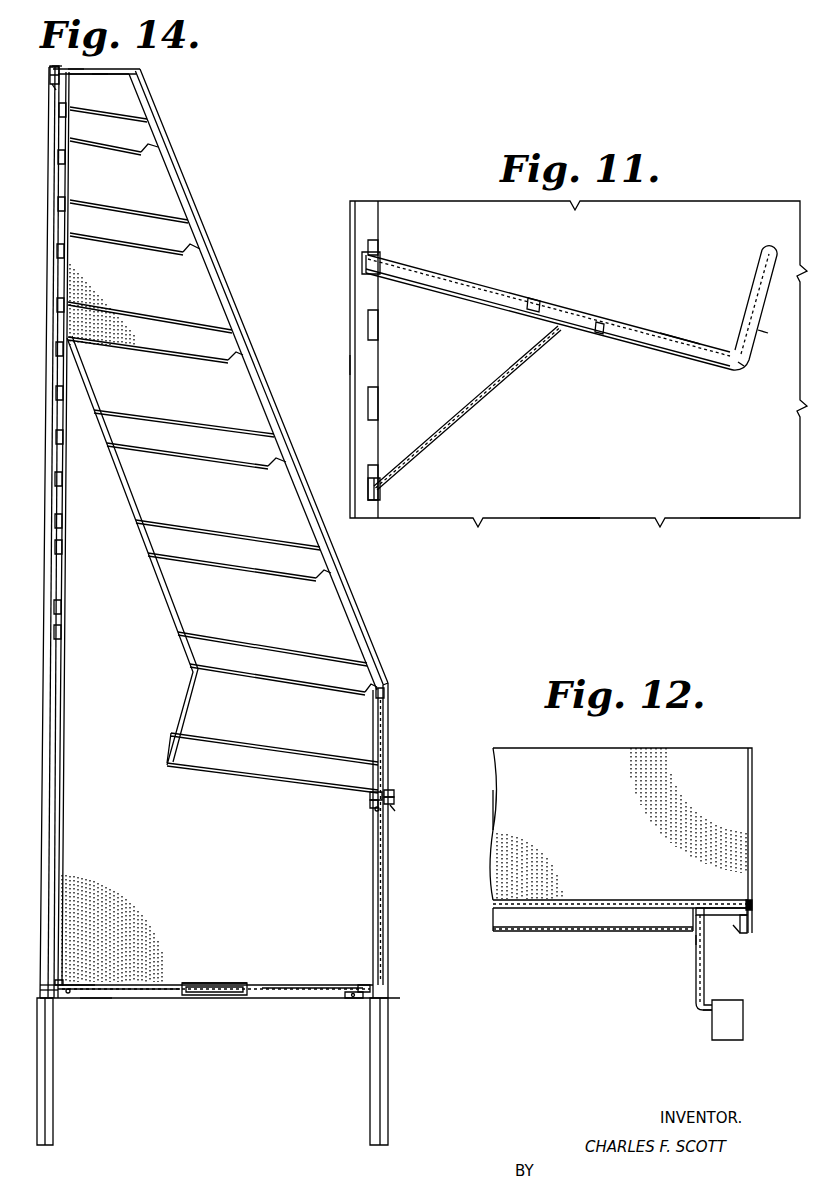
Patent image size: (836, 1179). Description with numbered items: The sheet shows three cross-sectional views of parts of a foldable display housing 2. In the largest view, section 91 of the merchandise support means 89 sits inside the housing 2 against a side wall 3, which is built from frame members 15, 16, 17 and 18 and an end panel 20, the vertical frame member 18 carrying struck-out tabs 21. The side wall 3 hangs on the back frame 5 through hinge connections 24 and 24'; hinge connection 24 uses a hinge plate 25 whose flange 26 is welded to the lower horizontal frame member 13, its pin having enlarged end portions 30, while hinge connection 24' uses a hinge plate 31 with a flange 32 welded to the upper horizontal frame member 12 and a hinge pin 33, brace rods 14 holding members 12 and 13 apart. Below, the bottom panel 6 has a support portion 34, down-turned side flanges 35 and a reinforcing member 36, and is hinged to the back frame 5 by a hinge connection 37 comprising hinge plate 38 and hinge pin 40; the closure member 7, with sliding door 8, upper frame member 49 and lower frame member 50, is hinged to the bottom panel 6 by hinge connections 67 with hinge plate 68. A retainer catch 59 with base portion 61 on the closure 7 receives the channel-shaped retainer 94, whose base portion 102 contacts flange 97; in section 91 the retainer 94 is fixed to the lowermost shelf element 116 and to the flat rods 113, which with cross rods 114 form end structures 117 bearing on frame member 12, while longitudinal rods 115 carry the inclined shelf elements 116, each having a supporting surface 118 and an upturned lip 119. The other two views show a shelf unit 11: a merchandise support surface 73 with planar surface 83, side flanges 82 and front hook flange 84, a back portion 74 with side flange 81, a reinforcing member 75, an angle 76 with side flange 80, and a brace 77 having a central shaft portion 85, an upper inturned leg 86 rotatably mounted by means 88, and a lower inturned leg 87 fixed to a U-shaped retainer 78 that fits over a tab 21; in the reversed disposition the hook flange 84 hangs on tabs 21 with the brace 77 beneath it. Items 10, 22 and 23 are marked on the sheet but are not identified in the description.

In FIG. 14, the housing 2 is at (365, 617).
In FIG. 11, the housing 2 is at (693, 514).
In FIG. 14, the side wall 3 is at (290, 500).
In FIG. 11, the side wall 3 is at (572, 512).
In FIG. 14, the back frame 5 is at (48, 205).
In FIG. 11, the back frame 5 is at (352, 290).
In FIG. 14, the bottom panel 6 is at (298, 984).
In FIG. 14, the closure member 7 is at (388, 877).
In FIG. 14, the sliding door 8 is at (383, 940).
In FIG. 14, the frame corner 10 is at (392, 682).
In FIG. 11, the shelf unit 11 is at (690, 340).
In FIG. 12, the shelf unit 11 is at (500, 812).
In FIG. 14, the upper horizontal frame member 12 is at (50, 80).
In FIG. 14, the lower horizontal frame member 13 is at (40, 990).
In FIG. 14, the brace rods 14 is at (48, 715).
In FIG. 11, the brace rods 14 is at (350, 365).
In FIG. 14, the frame member 15 is at (388, 913).
In FIG. 14, the frame member 16 is at (222, 300).
In FIG. 14, the frame member 17 is at (115, 75).
In FIG. 14, the frame member 18 is at (48, 828).
In FIG. 11, the frame member 18 is at (375, 375).
In FIG. 14, the end panel 20 is at (64, 606).
In FIG. 11, the end panel 20 is at (745, 207).
In FIG. 14, the tabs 21 is at (62, 540).
In FIG. 11, the tabs 21 is at (380, 335).
In FIG. 14, the front leg 22 is at (53, 1105).
In FIG. 14, the rear leg 23 is at (388, 1112).
In FIG. 14, the hinge connection 24 is at (110, 1020).
In FIG. 14, the hinge connection 24' is at (77, 55).
In FIG. 14, the hinge plate 25 is at (103, 1000).
In FIG. 14, the flange 26 is at (60, 982).
In FIG. 14, the enlarged end portions 30 is at (88, 1000).
In FIG. 14, the hinge plate 31 is at (100, 71).
In FIG. 14, the flange 32 is at (55, 66).
In FIG. 14, the hinge pin 33 is at (100, 72).
In FIG. 14, the support portion 34 is at (238, 982).
In FIG. 14, the down-turned side flanges 35 is at (305, 998).
In FIG. 14, the reinforcing member 36 is at (226, 998).
In FIG. 14, the hinge connection 37 is at (45, 984).
In FIG. 14, the hinge plate 38 is at (75, 984).
In FIG. 14, the hinge pin 40 is at (66, 994).
In FIG. 14, the upper frame member 49 is at (392, 806).
In FIG. 14, the lower frame member 50 is at (392, 998).
In FIG. 14, the retainer catch 59 is at (370, 803).
In FIG. 14, the base portion 61 is at (375, 810).
In FIG. 14, the hinge connections 67 is at (357, 1000).
In FIG. 14, the hinge plate 68 is at (365, 983).
In FIG. 11, the merchandise support surface 73 is at (452, 278).
In FIG. 12, the merchandise support surface 73 is at (495, 900).
In FIG. 11, the back portion 74 is at (748, 299).
In FIG. 12, the back portion 74 is at (735, 783).
In FIG. 11, the reinforcing member 75 is at (600, 334).
In FIG. 12, the reinforcing member 75 is at (535, 931).
In FIG. 11, the angle 76 is at (766, 297).
In FIG. 12, the angle 76 is at (693, 937).
In FIG. 11, the brace 77 is at (500, 380).
In FIG. 12, the brace 77 is at (705, 965).
In FIG. 11, the retainer 78 is at (380, 488).
In FIG. 12, the retainer 78 is at (744, 1015).
In FIG. 11, the side flange 80 is at (749, 350).
In FIG. 12, the side flange 80 is at (696, 912).
In FIG. 11, the side flange 81 is at (762, 333).
In FIG. 11, the side flanges 82 is at (668, 350).
In FIG. 12, the side flanges 82 is at (748, 920).
In FIG. 11, the planar support surface 83 is at (528, 298).
In FIG. 11, the front hook flange 84 is at (362, 262).
In FIG. 11, the central shaft portion 85 is at (455, 410).
In FIG. 12, the central shaft portion 85 is at (696, 980).
In FIG. 12, the upper inturned leg portion 86 is at (750, 903).
In FIG. 12, the lower inturned leg portion 87 is at (705, 1012).
In FIG. 12, the suitable means 88 is at (737, 930).
In FIG. 14, the merchandise support means 89 is at (52, 88).
In FIG. 14, the section 91 is at (240, 394).
In FIG. 14, the retainer 94 is at (393, 790).
In FIG. 14, the flange 97 is at (372, 790).
In FIG. 14, the base portion 102 is at (394, 798).
In FIG. 14, the flat rods 113 is at (172, 166).
In FIG. 14, the cross rods 114 is at (153, 210).
In FIG. 14, the longitudinal rods 115 is at (190, 218).
In FIG. 14, the shelf elements 116 is at (146, 345).
In FIG. 14, the end structure 117 is at (52, 70).
In FIG. 14, the supporting surface 118 is at (108, 244).
In FIG. 14, the upturned lip portion 119 is at (195, 250).